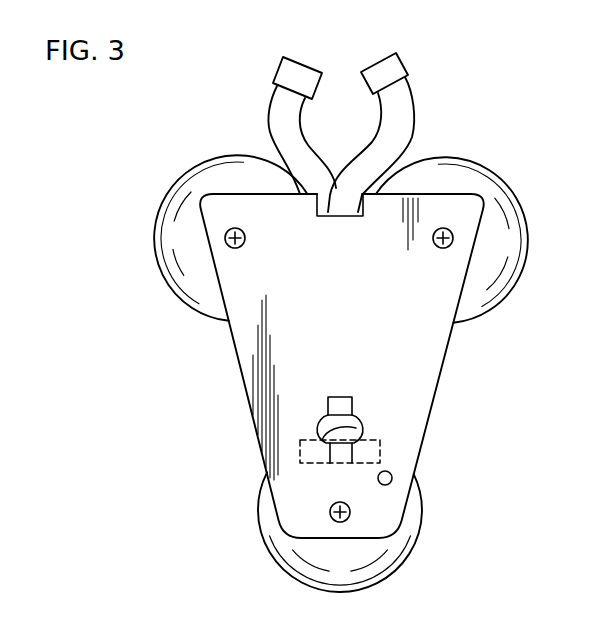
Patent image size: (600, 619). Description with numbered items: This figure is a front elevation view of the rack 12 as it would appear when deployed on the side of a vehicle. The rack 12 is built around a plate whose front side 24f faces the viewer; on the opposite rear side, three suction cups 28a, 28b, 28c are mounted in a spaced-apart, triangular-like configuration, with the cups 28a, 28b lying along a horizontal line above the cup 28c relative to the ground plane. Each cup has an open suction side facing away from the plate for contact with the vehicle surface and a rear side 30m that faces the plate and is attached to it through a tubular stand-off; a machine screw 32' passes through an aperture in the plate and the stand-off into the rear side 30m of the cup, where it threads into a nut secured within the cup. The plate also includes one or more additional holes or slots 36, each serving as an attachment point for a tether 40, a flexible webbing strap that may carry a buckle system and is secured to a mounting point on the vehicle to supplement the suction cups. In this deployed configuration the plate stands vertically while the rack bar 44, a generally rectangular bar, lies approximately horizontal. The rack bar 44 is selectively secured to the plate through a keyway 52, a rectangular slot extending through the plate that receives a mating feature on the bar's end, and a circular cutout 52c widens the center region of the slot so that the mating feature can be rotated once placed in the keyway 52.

The rack 12 is at (478, 86).
The front side of plate 24f is at (358, 338).
The suction cup 28a is at (168, 195).
The suction cup 28b is at (515, 192).
The suction cup 28c is at (262, 531).
The rear side of cup 30m is at (180, 275).
The machine screw 32' is at (339, 375).
The holes or slots 36 is at (340, 216).
The tether 40 is at (285, 108).
The rack bar 44 is at (382, 443).
The keyway 52 is at (342, 396).
The circular cutout 52c is at (340, 428).